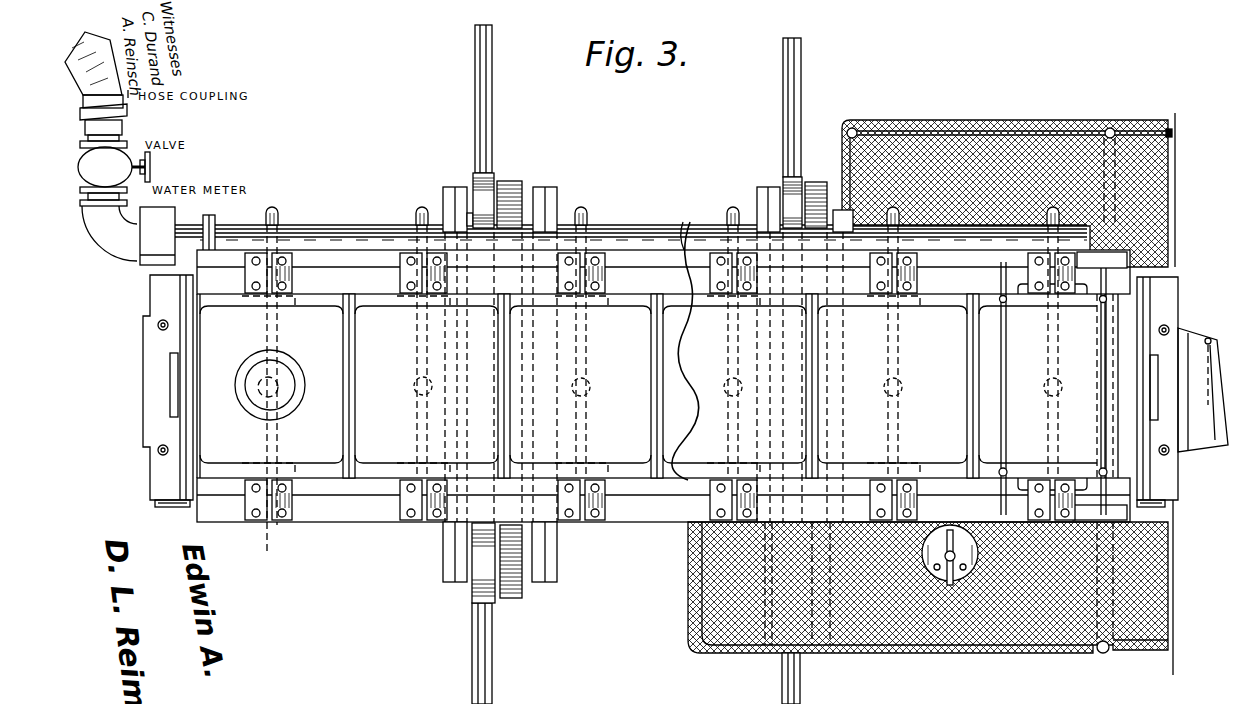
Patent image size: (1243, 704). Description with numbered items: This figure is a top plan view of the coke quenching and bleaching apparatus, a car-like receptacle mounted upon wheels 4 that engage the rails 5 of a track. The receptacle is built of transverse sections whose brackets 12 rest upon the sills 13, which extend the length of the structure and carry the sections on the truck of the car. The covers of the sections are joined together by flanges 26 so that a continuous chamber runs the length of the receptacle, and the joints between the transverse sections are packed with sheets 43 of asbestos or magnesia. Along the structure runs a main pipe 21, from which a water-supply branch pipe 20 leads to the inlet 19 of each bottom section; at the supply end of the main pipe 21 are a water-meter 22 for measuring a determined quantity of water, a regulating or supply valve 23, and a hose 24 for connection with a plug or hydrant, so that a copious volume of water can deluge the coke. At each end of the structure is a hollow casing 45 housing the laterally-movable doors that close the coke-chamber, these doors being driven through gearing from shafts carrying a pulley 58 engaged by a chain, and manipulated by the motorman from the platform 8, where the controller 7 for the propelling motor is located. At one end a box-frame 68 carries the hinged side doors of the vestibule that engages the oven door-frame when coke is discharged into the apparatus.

The wheels 4 is at (272, 207).
The rails 5 is at (492, 77).
The controller 7 is at (950, 555).
The platform 8 is at (930, 591).
The brackets 12 is at (272, 262).
The sills 13 is at (340, 258).
The inlet 19 is at (277, 395).
The water-supply branch pipe 20 is at (277, 210).
The main pipe 21 is at (648, 226).
The water-meter 22 is at (150, 247).
The regulating or supply valve 23 is at (92, 170).
The hose 24 is at (118, 48).
The flanges 26 is at (197, 430).
The sheets 43 is at (196, 371).
The hollow casing 45 is at (150, 383).
The pulley 58 is at (163, 507).
The box-frame 68 is at (1203, 390).